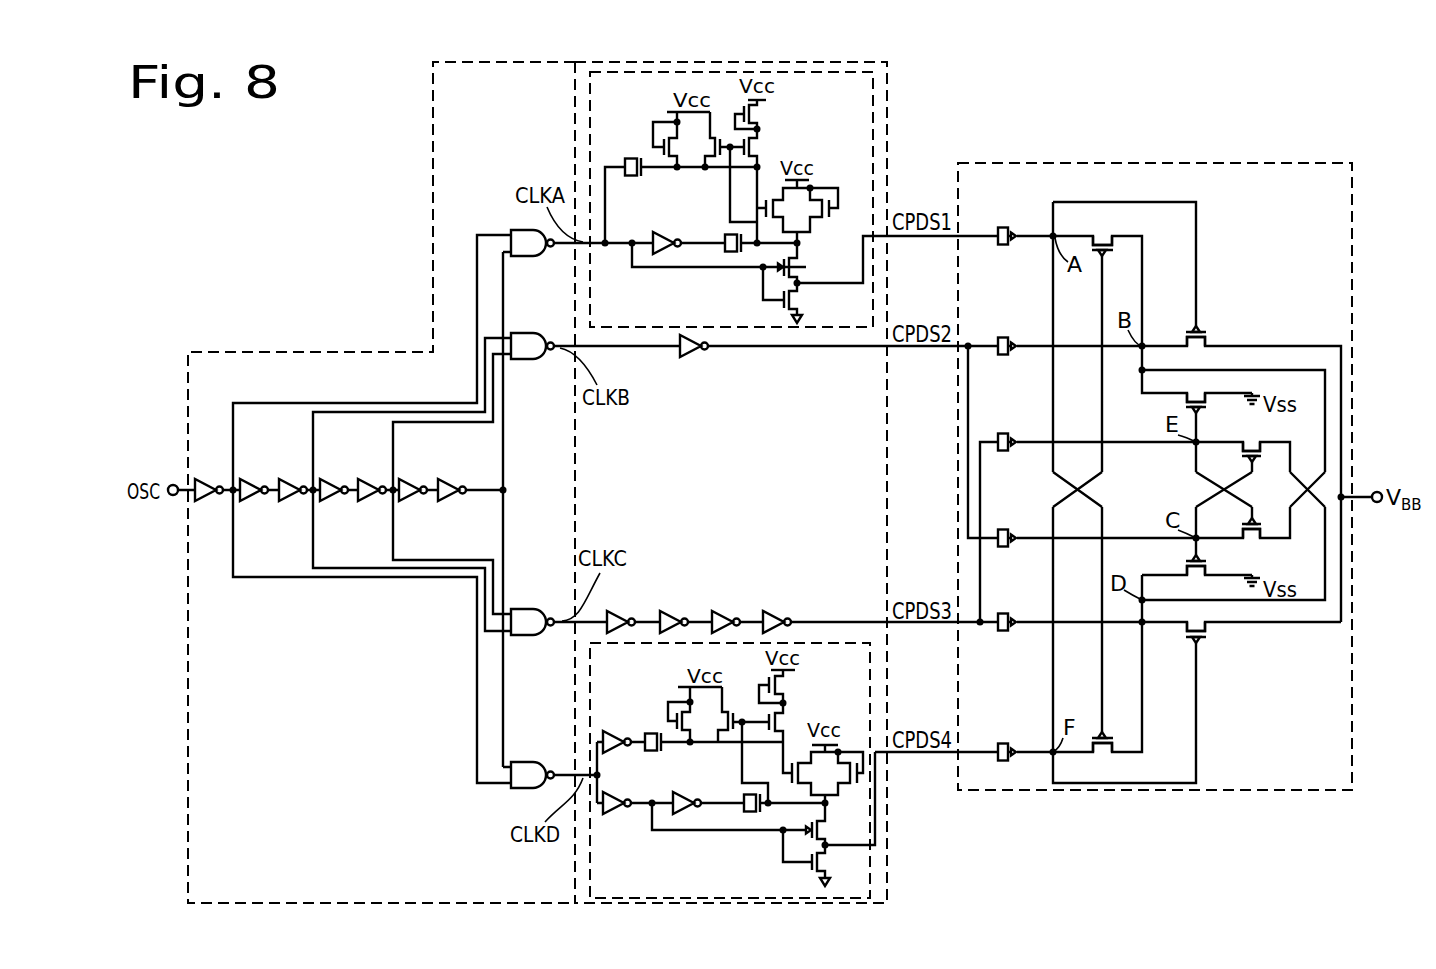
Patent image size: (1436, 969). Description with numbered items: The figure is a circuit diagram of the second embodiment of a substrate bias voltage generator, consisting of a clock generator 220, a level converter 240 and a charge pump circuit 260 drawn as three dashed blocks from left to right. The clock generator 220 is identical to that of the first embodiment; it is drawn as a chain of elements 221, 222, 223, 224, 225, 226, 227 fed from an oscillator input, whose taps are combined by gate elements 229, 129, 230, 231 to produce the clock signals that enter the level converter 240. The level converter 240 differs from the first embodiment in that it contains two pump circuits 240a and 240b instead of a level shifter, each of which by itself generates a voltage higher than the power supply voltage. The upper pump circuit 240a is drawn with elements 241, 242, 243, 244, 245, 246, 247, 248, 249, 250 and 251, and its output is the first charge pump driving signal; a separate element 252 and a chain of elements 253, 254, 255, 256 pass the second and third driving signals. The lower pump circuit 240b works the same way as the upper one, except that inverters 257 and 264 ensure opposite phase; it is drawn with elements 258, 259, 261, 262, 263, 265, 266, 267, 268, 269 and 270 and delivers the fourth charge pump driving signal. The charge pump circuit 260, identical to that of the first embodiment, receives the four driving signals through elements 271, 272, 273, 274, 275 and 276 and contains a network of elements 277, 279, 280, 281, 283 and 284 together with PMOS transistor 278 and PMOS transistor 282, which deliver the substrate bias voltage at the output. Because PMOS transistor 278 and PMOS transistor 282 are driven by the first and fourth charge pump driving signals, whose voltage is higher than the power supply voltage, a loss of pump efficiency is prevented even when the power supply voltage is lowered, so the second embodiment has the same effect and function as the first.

The clock generator 220 is at (433, 206).
The level converter 240 is at (887, 133).
The pump circuit 240a is at (873, 93).
The pump circuit 240b is at (870, 880).
The charge pump circuit 260 is at (1302, 163).
The inverter 221 is at (207, 502).
The inverter 222 is at (252, 502).
The inverter 223 is at (291, 478).
The inverter 224 is at (332, 502).
The inverter 225 is at (371, 478).
The inverter 226 is at (411, 502).
The inverter 227 is at (450, 478).
The NAND gate 229 is at (526, 258).
The NAND gate 129 is at (526, 360).
The NAND gate 230 is at (527, 608).
The NAND gate 231 is at (527, 762).
The PMOS transistor 241 is at (666, 157).
The PMOS transistor 242 is at (703, 152).
The capacitor 243 is at (630, 180).
The PMOS transistor 244 is at (763, 115).
The PMOS transistor 245 is at (768, 148).
The PMOS transistor 246 is at (765, 223).
The PMOS transistor 247 is at (815, 213).
The inverter 248 is at (664, 230).
The capacitor 249 is at (714, 252).
The PMOS transistor 250 is at (807, 263).
The NMOS transistor 251 is at (810, 303).
The inverter 252 is at (697, 359).
The inverter 253 is at (629, 610).
The inverter 254 is at (681, 610).
The inverter 255 is at (733, 610).
The inverter 256 is at (784, 610).
The inverter 257 is at (621, 754).
The capacitor 258 is at (663, 755).
The PMOS transistor 259 is at (686, 738).
The PMOS transistor 261 is at (718, 737).
The PMOS transistor 262 is at (789, 688).
The PMOS transistor 263 is at (782, 740).
The inverter 264 is at (626, 812).
The inverter 265 is at (697, 812).
The capacitor 266 is at (732, 796).
The PMOS transistor 267 is at (811, 778).
The PMOS transistor 268 is at (845, 787).
The PMOS transistor 269 is at (807, 843).
The NMOS transistor 270 is at (837, 865).
The pumping capacitor 271 is at (1005, 227).
The pumping capacitor 272 is at (1005, 338).
The pumping capacitor 273 is at (1005, 529).
The pumping capacitor 274 is at (1005, 613).
The pumping capacitor 275 is at (1005, 433).
The pumping capacitor 276 is at (1005, 743).
The transfer transistor 277 is at (1103, 234).
The PMOS transistor 278 is at (1195, 349).
The transfer transistor 279 is at (1195, 406).
The transfer transistor 280 is at (1101, 755).
The transfer transistor 281 is at (1195, 577).
The PMOS transistor 282 is at (1195, 621).
The transfer transistor 283 is at (1251, 542).
The transfer transistor 284 is at (1251, 440).